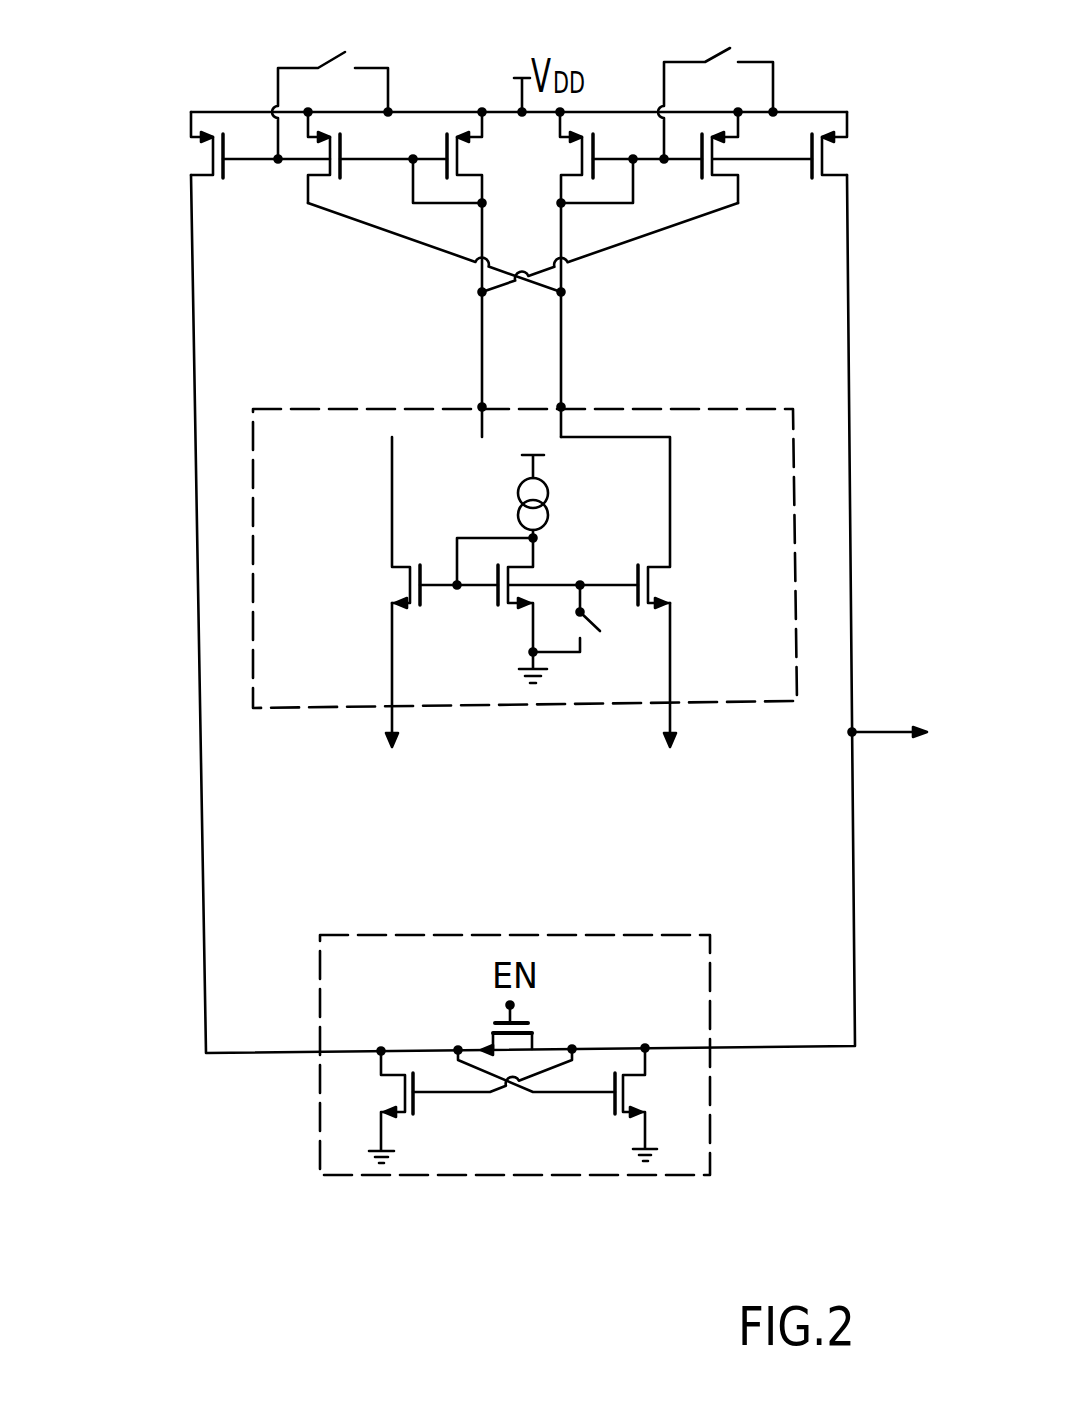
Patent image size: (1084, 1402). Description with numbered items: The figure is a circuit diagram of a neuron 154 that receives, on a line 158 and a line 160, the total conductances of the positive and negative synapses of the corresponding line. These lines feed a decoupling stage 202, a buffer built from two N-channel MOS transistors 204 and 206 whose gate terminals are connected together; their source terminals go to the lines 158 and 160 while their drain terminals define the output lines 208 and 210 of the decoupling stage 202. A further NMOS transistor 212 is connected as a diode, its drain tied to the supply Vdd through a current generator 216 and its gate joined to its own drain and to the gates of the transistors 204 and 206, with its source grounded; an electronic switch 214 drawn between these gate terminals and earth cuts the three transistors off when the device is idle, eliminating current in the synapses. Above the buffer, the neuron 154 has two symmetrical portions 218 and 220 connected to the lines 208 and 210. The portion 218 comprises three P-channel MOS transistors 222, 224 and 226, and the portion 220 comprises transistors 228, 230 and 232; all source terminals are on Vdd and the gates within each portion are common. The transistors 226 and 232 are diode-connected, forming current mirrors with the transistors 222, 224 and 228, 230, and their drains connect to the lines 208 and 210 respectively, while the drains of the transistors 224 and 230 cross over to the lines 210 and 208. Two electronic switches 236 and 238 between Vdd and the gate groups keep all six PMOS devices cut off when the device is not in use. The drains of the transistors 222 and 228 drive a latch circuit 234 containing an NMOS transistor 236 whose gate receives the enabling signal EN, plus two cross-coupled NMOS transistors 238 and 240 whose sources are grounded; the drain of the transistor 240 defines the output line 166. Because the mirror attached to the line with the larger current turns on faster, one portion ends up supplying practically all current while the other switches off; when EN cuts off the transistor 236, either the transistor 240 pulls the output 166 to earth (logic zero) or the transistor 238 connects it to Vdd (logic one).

The neuron 154 is at (245, 1090).
The line 158 is at (393, 750).
The line 160 is at (678, 750).
The output line 166 is at (888, 730).
The decoupling stage 202 is at (783, 490).
The N-channel MOS transistor 204 is at (402, 582).
The N-channel MOS transistor 206 is at (663, 583).
The output line 208 is at (482, 407).
The output line 210 is at (561, 407).
The NMOS transistor 212 is at (520, 578).
The switch 214 is at (602, 628).
The current generator 216 is at (545, 514).
The portion 218 is at (385, 254).
The portion 220 is at (658, 254).
The P-channel MOS transistor 222 is at (205, 161).
The P-channel MOS transistor 224 is at (322, 167).
The P-channel MOS transistor 226 is at (468, 160).
The P-channel MOS transistor 228 is at (833, 152).
The P-channel MOS transistor 230 is at (729, 162).
The P-channel MOS transistor 232 is at (570, 160).
The latch circuit 234 is at (698, 1092).
The electronic switch / NMOS transistor 236 is at (333, 52).
The electronic switch / NMOS transistor 238 is at (731, 48).
The NMOS transistor 240 is at (640, 1094).